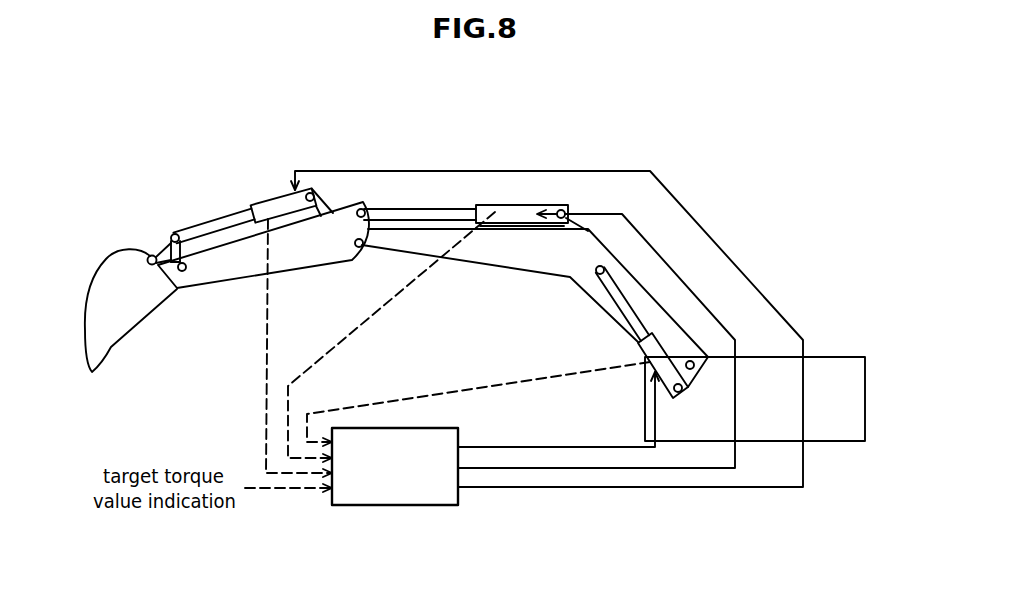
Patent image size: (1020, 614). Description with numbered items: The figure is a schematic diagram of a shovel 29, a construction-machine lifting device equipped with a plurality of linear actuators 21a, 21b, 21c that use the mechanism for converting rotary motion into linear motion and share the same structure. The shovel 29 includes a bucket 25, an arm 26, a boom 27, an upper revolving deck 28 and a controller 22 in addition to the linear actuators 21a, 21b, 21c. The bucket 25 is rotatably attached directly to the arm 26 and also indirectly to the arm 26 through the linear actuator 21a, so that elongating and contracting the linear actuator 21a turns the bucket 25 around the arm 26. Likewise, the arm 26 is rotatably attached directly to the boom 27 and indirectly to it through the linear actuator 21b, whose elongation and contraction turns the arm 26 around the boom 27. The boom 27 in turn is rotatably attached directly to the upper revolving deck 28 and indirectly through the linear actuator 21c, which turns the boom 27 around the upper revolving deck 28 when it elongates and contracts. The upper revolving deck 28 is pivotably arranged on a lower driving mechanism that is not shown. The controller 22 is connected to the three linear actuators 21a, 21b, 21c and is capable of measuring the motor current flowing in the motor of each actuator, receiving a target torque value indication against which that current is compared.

The linear actuator 21a is at (278, 210).
The linear actuator 21b is at (522, 212).
The linear actuator 21c is at (641, 352).
The controller 22 is at (405, 493).
The bucket 25 is at (130, 318).
The arm 26 is at (207, 277).
The boom 27 is at (518, 256).
The upper revolving deck 28 is at (832, 372).
The shovel 29 is at (729, 196).